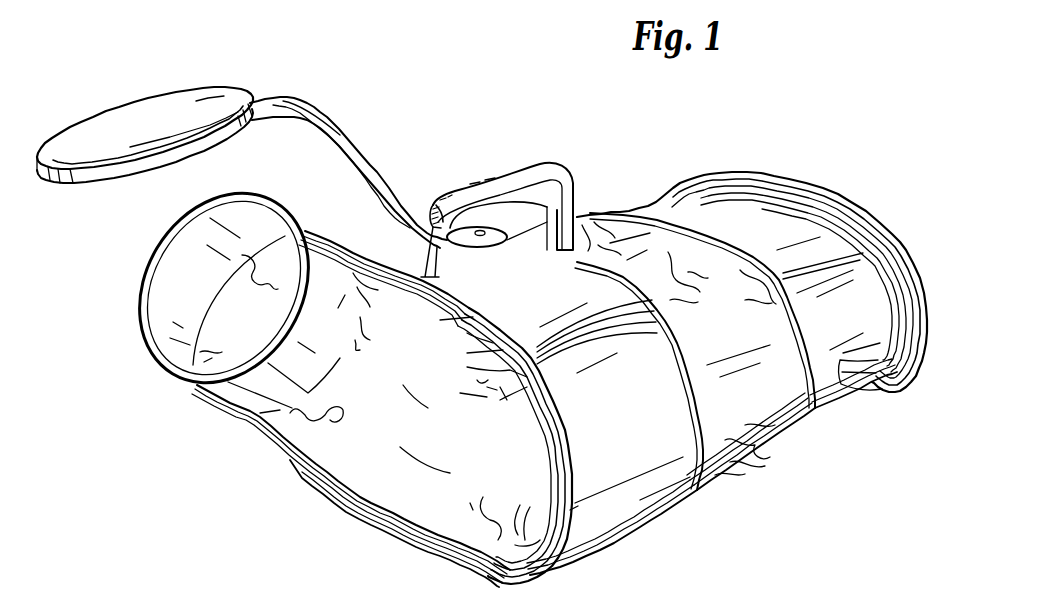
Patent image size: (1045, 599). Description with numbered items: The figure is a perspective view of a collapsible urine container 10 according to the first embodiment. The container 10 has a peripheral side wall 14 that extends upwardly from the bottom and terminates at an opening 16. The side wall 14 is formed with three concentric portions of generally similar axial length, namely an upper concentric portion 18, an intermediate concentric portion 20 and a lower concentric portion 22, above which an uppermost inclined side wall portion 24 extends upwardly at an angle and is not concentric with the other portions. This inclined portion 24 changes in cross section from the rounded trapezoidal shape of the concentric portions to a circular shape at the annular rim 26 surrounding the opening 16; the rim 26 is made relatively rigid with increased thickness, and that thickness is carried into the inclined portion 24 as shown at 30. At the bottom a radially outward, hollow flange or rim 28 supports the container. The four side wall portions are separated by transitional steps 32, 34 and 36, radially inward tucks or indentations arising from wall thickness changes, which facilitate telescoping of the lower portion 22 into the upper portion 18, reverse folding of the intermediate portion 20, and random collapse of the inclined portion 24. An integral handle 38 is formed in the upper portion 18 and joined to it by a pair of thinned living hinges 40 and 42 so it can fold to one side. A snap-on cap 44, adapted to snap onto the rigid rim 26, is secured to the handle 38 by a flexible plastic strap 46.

The container 10 is at (459, 118).
The peripheral side wall 14 is at (651, 537).
The opening 16 is at (176, 252).
The upper concentric portion 18 is at (597, 518).
The intermediate concentric portion 20 is at (757, 457).
The lower concentric portion 22 is at (847, 385).
The uppermost peripheral side wall portion 24 is at (387, 478).
The rim 26 is at (192, 370).
The flange or rim 28 is at (917, 284).
The increased thickness 30 is at (322, 241).
The transitional step 32 is at (567, 433).
The transitional step 34 is at (700, 430).
The transitional step 36 is at (813, 353).
The integral handle 38 is at (533, 180).
The living hinge 40 is at (497, 253).
The living hinge 42 is at (568, 263).
The cap 44 is at (141, 90).
The flexible plastic strap 46 is at (341, 132).